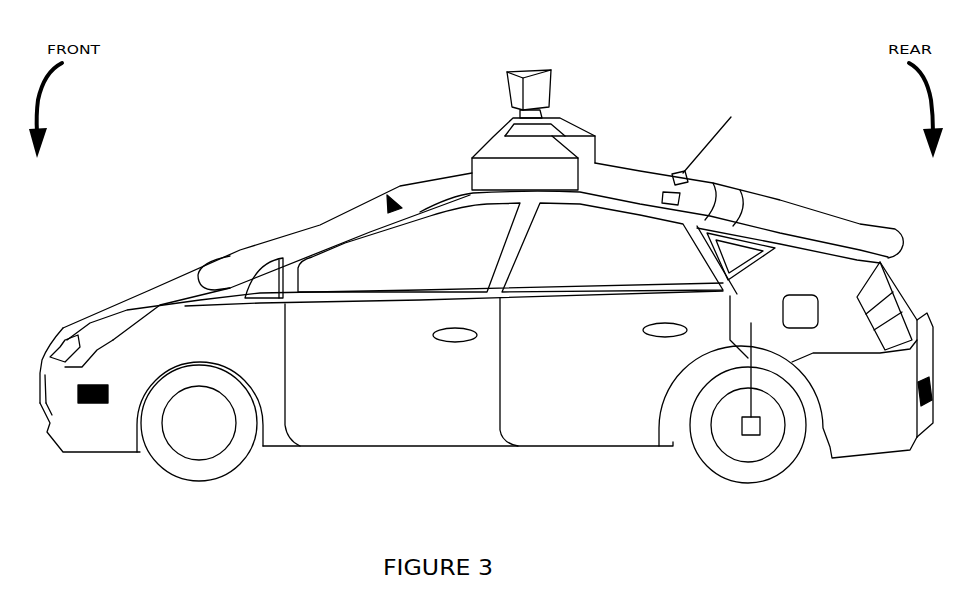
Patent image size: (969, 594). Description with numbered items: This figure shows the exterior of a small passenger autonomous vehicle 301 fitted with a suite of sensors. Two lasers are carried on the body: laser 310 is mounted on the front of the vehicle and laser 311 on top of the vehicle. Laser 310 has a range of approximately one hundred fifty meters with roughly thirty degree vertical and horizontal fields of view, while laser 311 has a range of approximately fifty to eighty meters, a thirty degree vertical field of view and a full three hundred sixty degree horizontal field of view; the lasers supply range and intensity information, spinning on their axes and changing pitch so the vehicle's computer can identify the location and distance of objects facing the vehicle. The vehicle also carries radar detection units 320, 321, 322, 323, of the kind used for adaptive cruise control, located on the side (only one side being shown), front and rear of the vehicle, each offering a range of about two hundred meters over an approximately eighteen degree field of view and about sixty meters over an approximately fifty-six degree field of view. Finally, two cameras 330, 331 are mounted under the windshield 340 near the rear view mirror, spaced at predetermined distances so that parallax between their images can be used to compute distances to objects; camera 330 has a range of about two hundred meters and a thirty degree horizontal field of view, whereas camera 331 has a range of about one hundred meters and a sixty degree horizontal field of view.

The vehicle 301 is at (248, 31).
The laser 310 is at (40, 373).
The laser 311 is at (508, 77).
The radar detection unit 320 is at (45, 423).
The radar detection unit 321 is at (278, 447).
The radar detection unit 322 is at (95, 405).
The radar detection unit 323 is at (933, 406).
The camera 330 is at (329, 189).
The camera 331 is at (382, 196).
The windshield 340 is at (335, 232).